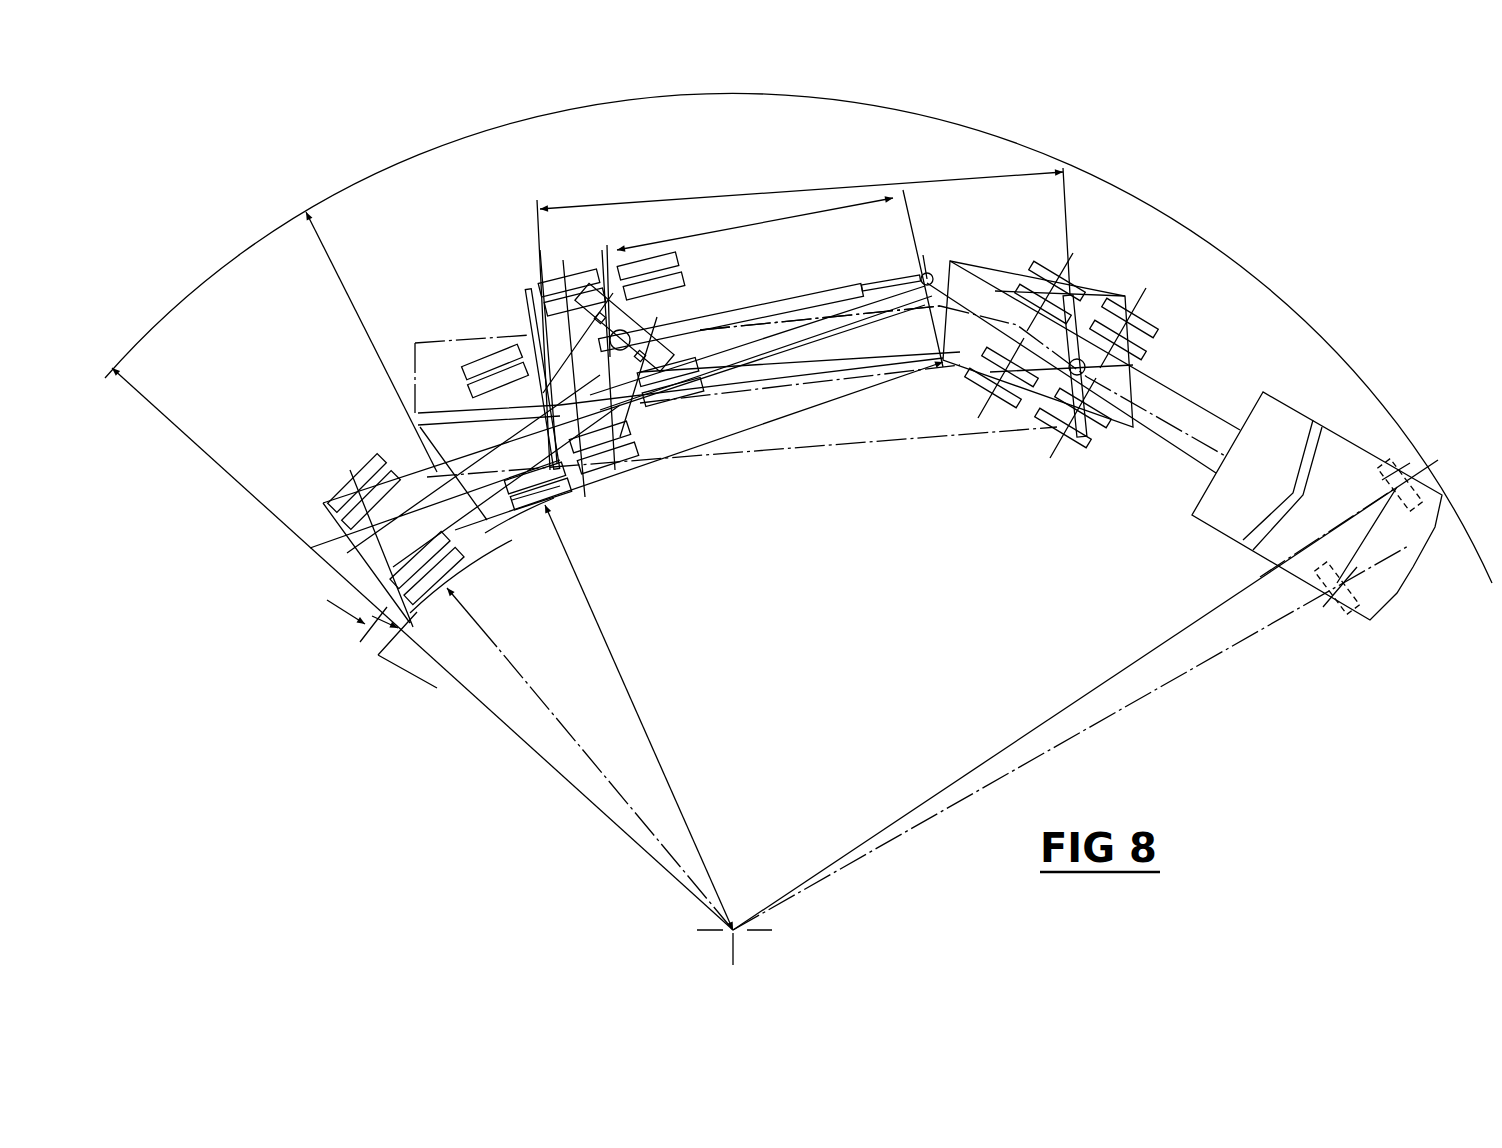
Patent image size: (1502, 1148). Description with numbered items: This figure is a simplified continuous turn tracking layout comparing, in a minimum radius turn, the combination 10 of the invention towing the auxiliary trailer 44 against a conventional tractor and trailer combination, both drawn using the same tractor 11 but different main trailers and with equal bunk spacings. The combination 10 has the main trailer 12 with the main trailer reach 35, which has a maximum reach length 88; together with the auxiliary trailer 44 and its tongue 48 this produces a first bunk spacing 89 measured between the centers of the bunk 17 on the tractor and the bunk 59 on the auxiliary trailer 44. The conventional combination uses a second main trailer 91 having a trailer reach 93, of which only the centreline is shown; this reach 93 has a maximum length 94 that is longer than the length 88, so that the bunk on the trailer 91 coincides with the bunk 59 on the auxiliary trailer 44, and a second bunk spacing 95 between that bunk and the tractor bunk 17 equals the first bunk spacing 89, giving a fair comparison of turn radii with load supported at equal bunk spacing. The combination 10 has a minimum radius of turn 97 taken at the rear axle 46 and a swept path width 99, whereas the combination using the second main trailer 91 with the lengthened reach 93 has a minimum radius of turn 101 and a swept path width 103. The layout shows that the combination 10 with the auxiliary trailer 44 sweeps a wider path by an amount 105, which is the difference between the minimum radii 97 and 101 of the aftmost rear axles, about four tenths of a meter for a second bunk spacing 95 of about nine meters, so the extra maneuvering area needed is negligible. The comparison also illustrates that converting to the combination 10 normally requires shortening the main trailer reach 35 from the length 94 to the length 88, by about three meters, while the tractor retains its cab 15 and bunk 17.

The combination 10 is at (1087, 550).
The tractor 11 is at (1168, 516).
The main trailer 12 is at (697, 252).
The cab 15 is at (1162, 398).
The bunk 17 is at (1100, 427).
The main trailer reach 35 is at (807, 292).
The auxiliary trailer 44 is at (462, 393).
The rear axle 46 is at (410, 625).
The tongue 48 is at (430, 458).
The bunk 59 is at (543, 350).
The maximum reach length 88 is at (860, 208).
The first bunk spacing 89 is at (753, 195).
The second main trailer 91 is at (608, 497).
The trailer reach 93 is at (765, 340).
The maximum length 94 is at (797, 412).
The second bunk spacing 95 is at (803, 319).
The minimum radius of turn 97 is at (572, 738).
The swept path width 99 is at (207, 460).
The minimum radius of turn 101 is at (576, 580).
The swept path width 103 is at (353, 292).
The amount 105 is at (437, 688).